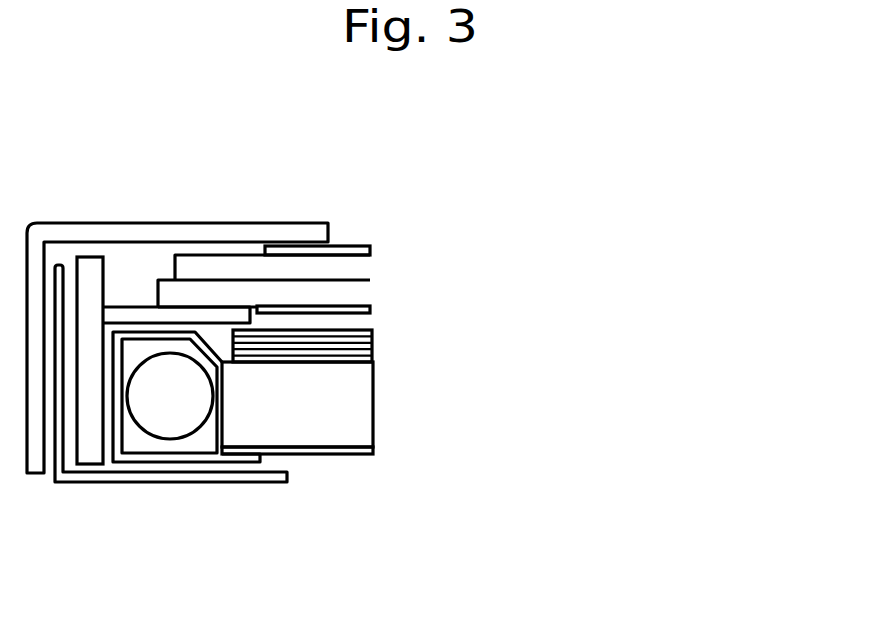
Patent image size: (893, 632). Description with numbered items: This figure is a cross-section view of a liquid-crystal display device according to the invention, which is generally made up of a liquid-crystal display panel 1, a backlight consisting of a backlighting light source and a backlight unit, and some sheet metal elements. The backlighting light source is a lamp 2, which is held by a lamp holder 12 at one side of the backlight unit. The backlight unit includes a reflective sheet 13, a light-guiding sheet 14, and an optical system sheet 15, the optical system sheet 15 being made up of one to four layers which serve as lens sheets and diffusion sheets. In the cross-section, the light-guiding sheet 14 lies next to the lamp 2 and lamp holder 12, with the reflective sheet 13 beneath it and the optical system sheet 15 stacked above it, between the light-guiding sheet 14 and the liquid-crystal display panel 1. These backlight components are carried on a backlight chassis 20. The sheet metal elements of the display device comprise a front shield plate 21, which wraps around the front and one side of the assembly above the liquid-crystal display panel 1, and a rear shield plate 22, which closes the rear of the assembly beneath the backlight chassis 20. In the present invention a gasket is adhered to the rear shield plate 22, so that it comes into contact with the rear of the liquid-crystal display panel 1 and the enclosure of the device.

The liquid-crystal display panel 1 is at (382, 313).
The lamp 2 is at (182, 415).
The lamp holder 12 is at (177, 457).
The reflective sheet 13 is at (373, 449).
The light-guiding sheet 14 is at (382, 363).
The optical system sheet 15 is at (382, 328).
The backlight chassis 20 is at (86, 257).
The front shield plate 21 is at (220, 223).
The rear shield plate 22 is at (93, 480).